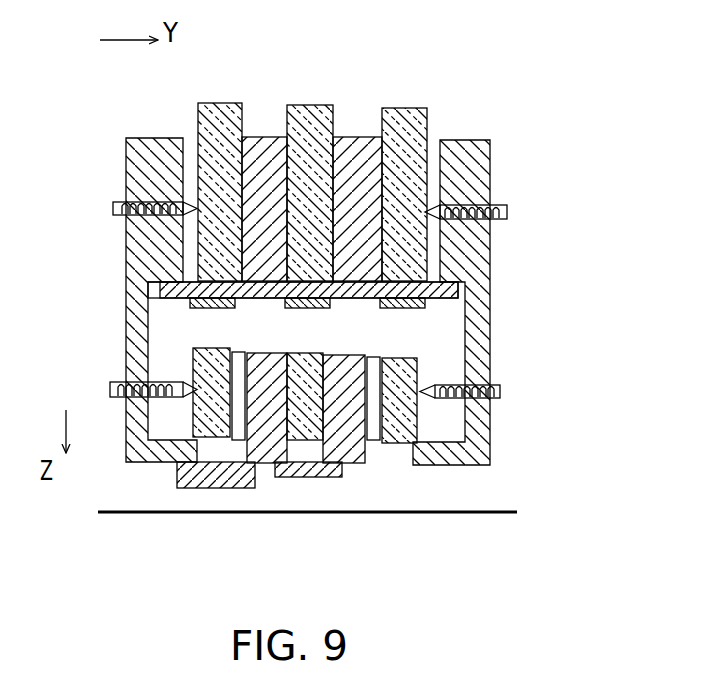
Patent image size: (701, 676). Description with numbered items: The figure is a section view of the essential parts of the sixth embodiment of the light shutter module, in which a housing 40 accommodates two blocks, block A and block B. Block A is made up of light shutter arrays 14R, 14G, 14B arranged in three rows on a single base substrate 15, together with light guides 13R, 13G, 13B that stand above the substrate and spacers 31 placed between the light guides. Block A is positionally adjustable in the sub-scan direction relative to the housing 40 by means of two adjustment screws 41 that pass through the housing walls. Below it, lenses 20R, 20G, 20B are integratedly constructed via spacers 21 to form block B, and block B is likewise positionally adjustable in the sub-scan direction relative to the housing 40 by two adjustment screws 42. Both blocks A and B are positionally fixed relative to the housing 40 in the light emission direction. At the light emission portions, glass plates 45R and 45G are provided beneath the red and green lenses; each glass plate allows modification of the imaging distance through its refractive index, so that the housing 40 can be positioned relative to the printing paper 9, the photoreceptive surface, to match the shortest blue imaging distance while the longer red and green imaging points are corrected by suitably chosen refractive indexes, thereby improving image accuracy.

The printing paper 9 is at (505, 512).
The light guide 13R is at (219, 103).
The light guide 13G is at (315, 105).
The light guide 13B is at (408, 108).
The light shutter array 14R is at (193, 301).
The light shutter array 14G is at (312, 308).
The light shutter array 14B is at (418, 310).
The base substrate 15 is at (193, 300).
The lens 20R is at (193, 413).
The lens 20G is at (305, 477).
The lens 20B is at (395, 443).
The spacer 21 is at (265, 463).
The spacer 31 is at (268, 137).
The housing 40 is at (490, 255).
The adjustment screw 41 is at (123, 202).
The adjustment screw 42 is at (110, 390).
The glass plate 45R is at (193, 488).
The glass plate 45G is at (332, 477).
The block A is at (445, 120).
The block B is at (437, 365).